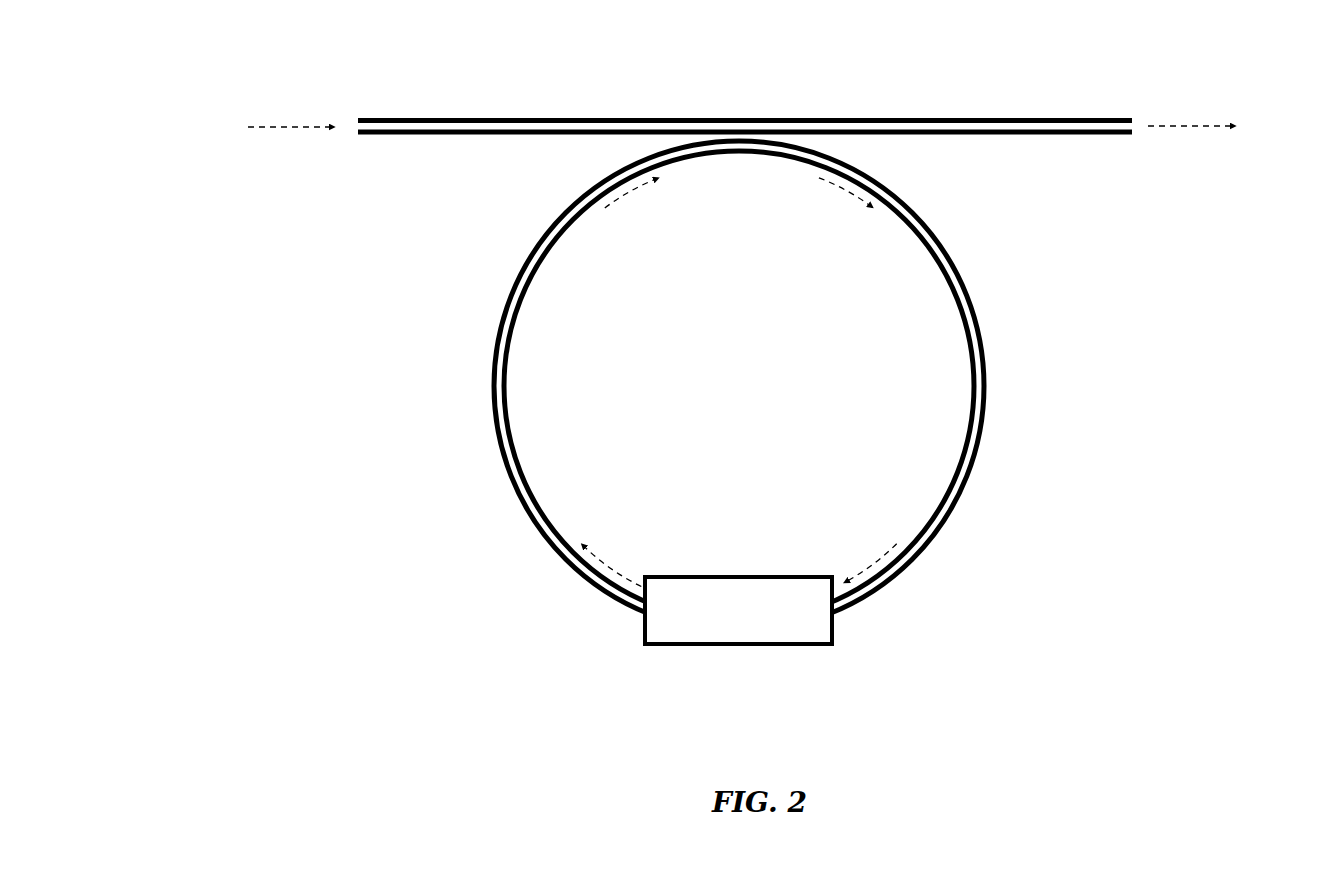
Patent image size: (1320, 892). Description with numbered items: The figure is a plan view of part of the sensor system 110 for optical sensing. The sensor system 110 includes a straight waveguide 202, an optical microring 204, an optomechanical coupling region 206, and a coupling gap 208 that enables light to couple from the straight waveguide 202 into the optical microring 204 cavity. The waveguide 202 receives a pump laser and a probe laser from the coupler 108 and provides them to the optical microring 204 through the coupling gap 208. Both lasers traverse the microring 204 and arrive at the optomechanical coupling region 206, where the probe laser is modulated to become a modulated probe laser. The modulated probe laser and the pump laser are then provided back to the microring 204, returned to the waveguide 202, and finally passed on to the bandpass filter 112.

The sensor system 110 is at (143, 87).
The waveguide 202 is at (542, 112).
The optical microring 204 is at (983, 317).
The optomechanical coupling region 206 is at (759, 653).
The coupling gap 208 is at (800, 139).
The coupler 108 is at (256, 128).
The bandpass filter 112 is at (1230, 128).